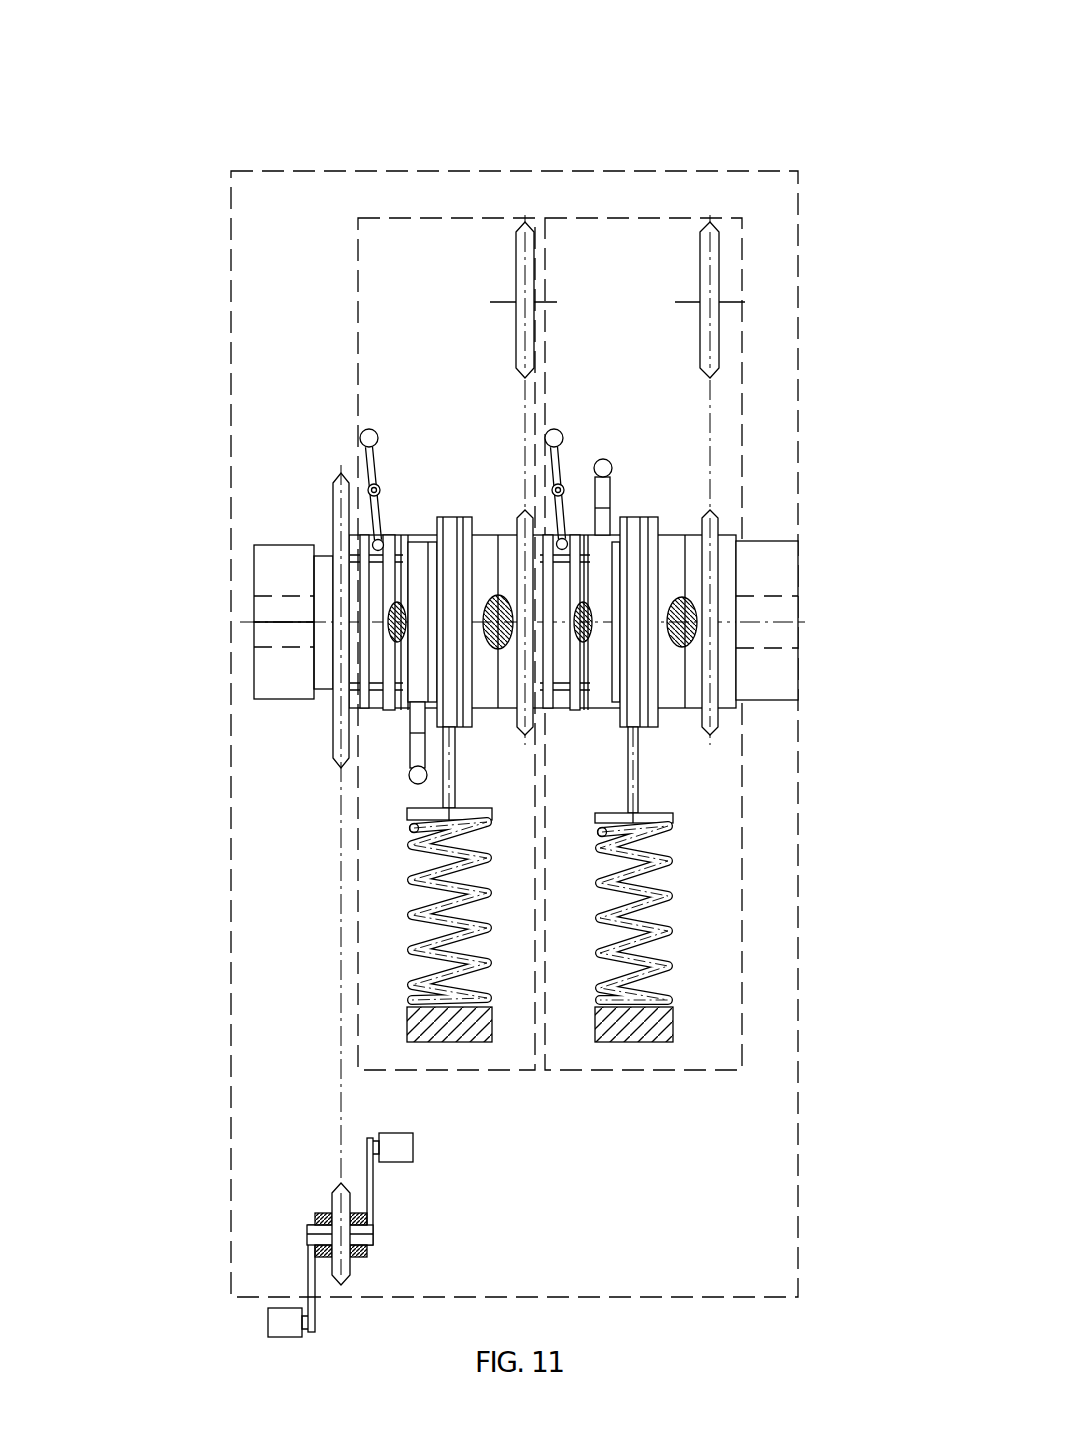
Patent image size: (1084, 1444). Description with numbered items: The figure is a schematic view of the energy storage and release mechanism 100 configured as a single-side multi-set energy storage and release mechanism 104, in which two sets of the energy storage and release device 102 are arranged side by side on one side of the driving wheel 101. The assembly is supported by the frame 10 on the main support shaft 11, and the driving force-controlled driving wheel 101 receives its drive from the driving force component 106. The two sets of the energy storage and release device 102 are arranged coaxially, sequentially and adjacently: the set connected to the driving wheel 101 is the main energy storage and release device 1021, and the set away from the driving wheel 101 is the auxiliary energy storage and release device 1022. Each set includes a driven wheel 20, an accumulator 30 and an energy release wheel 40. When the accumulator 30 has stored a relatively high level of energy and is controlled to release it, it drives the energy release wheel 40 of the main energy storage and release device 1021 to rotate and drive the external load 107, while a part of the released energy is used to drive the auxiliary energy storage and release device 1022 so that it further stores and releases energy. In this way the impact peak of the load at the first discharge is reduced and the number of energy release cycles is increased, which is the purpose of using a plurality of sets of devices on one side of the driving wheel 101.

The energy storage and release mechanism 100 is at (165, 246).
The single-side multi-set energy storage and release mechanism 104 is at (412, 173).
The energy storage and release device 102 is at (722, 102).
The main energy storage and release device 1021 is at (477, 220).
The auxiliary energy storage and release device 1022 is at (640, 220).
The external load 107 is at (510, 317).
The driving wheel 101 is at (337, 515).
The frame 10 is at (277, 573).
The main support shaft 11 is at (265, 650).
The driven wheel 20 is at (455, 550).
The energy release wheel 40 is at (540, 620).
The accumulator 30 is at (475, 928).
The driving force component 106 is at (405, 1233).